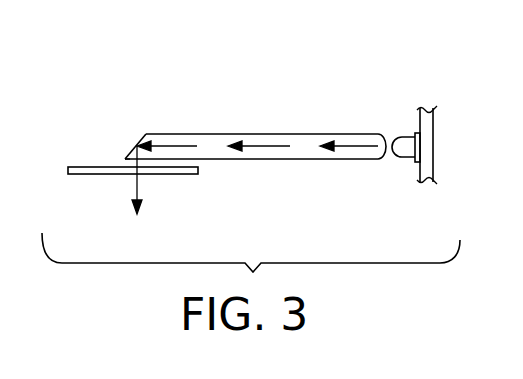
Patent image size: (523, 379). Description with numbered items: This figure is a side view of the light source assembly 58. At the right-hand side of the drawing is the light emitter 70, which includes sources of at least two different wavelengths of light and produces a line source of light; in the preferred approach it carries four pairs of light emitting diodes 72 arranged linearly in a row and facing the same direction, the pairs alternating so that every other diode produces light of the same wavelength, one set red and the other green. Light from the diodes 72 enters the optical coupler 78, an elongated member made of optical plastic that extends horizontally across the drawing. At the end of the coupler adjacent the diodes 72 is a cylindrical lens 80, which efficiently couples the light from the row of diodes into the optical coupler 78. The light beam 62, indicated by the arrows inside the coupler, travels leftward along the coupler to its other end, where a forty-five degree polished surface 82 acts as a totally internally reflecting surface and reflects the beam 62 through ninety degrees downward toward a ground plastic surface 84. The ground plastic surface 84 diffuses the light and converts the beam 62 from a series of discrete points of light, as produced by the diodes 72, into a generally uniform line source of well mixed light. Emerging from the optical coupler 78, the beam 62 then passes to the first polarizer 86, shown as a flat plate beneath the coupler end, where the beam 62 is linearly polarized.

The light source assembly 58 is at (135, 106).
The light beam 62 is at (137, 193).
The light emitter 70 is at (433, 125).
The light emitting diodes 72 is at (405, 158).
The optical coupler 78 is at (298, 133).
The cylindrical lens 80 is at (380, 160).
The 45 degree polished surface 82 is at (144, 137).
The ground plastic surface 84 is at (125, 159).
The first polarizer 86 is at (78, 175).